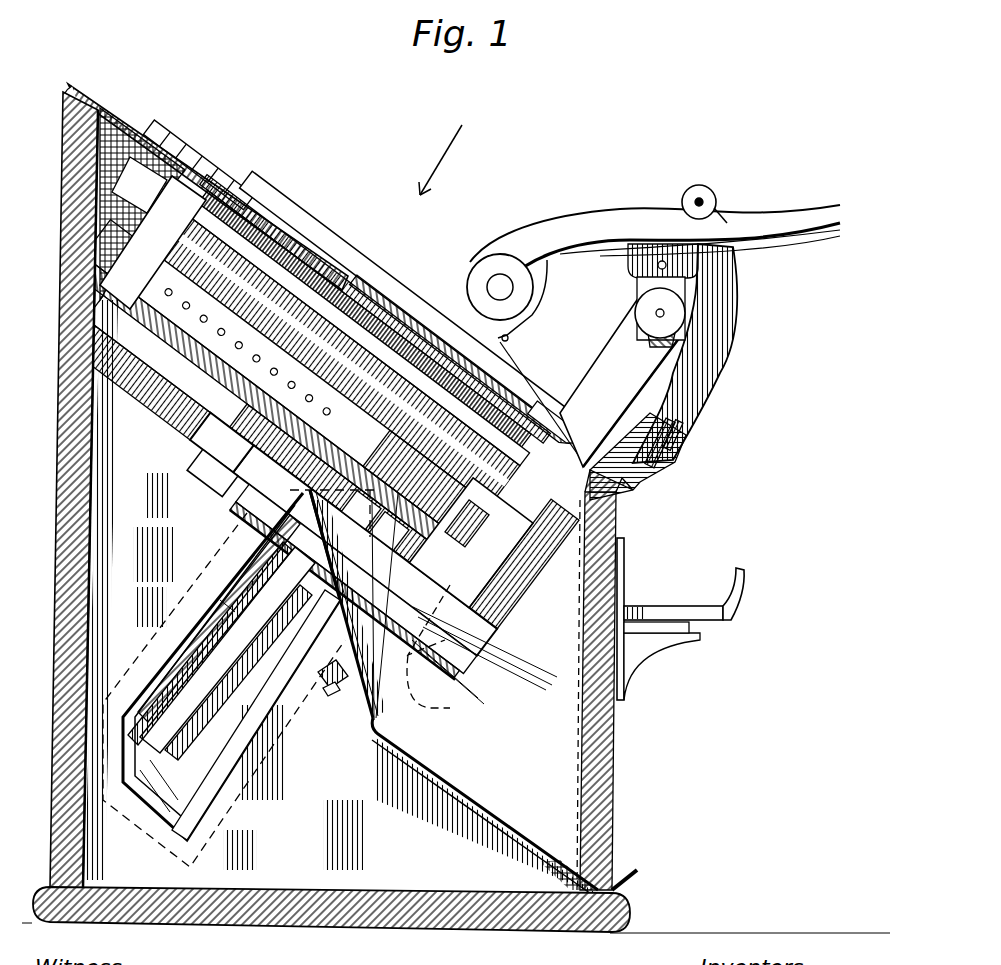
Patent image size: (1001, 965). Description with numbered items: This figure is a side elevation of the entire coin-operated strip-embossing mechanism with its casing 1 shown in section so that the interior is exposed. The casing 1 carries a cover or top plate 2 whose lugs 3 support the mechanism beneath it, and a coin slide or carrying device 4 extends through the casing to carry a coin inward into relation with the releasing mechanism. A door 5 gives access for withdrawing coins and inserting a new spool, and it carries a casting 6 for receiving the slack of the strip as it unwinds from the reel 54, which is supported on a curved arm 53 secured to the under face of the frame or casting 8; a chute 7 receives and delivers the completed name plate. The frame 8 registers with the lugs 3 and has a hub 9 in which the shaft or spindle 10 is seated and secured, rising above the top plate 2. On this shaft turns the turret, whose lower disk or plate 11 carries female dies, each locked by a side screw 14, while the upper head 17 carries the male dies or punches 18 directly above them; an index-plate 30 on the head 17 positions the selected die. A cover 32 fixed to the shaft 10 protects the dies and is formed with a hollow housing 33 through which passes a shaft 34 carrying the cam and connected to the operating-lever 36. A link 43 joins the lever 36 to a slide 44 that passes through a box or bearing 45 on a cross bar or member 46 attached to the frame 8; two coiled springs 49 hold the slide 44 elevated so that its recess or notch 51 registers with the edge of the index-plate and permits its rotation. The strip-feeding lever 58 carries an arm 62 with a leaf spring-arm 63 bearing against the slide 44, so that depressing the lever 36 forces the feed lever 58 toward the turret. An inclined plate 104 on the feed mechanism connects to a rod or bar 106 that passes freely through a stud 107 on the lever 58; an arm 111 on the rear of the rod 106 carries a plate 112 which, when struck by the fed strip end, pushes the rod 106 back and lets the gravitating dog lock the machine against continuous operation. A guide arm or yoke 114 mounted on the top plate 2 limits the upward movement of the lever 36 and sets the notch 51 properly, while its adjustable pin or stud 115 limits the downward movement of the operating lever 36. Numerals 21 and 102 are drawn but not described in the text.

The casing 1 is at (60, 520).
The cover or top plate 2 is at (206, 187).
The lugs 3 is at (153, 208).
The coin slide or carrying device 4 is at (743, 592).
The door 5 is at (248, 656).
The casting 6 is at (231, 665).
The chute 7 is at (540, 628).
The frame or casting 8 is at (281, 487).
The hub 9 is at (222, 443).
The shaft or spindle 10 is at (212, 479).
The disk or plate 11 is at (246, 351).
The screw 14 is at (300, 392).
The upper portion or head of the turret 17 is at (204, 312).
The male dies or punches 18 is at (276, 373).
The comb 21 is at (341, 352).
The index-plate 30 is at (186, 147).
The cover 32 is at (300, 212).
The hollow housing or projection 33 is at (477, 254).
The shaft 34 is at (500, 287).
The operating-lever 36 is at (655, 237).
The link 43 is at (645, 292).
The slide 44 is at (621, 383).
The box or bearing 45 is at (596, 471).
The cross bar or member 46 is at (628, 537).
The coiled springs 49 is at (366, 582).
The recess or notch 51 is at (565, 418).
The curved arm 53 is at (246, 547).
The reel 54 is at (221, 651).
The lever 58 is at (409, 514).
The arm 62 is at (325, 672).
The spring-arm 63 is at (328, 694).
The cam loop 102 is at (440, 712).
The inclined plate 104 is at (504, 378).
The rod or bar 106 is at (515, 397).
The stud 107 is at (384, 503).
The arm 111 is at (504, 459).
The plate 112 is at (270, 427).
The guide arm or yoke 114 is at (735, 315).
The adjustable pin or stud 115 is at (680, 423).